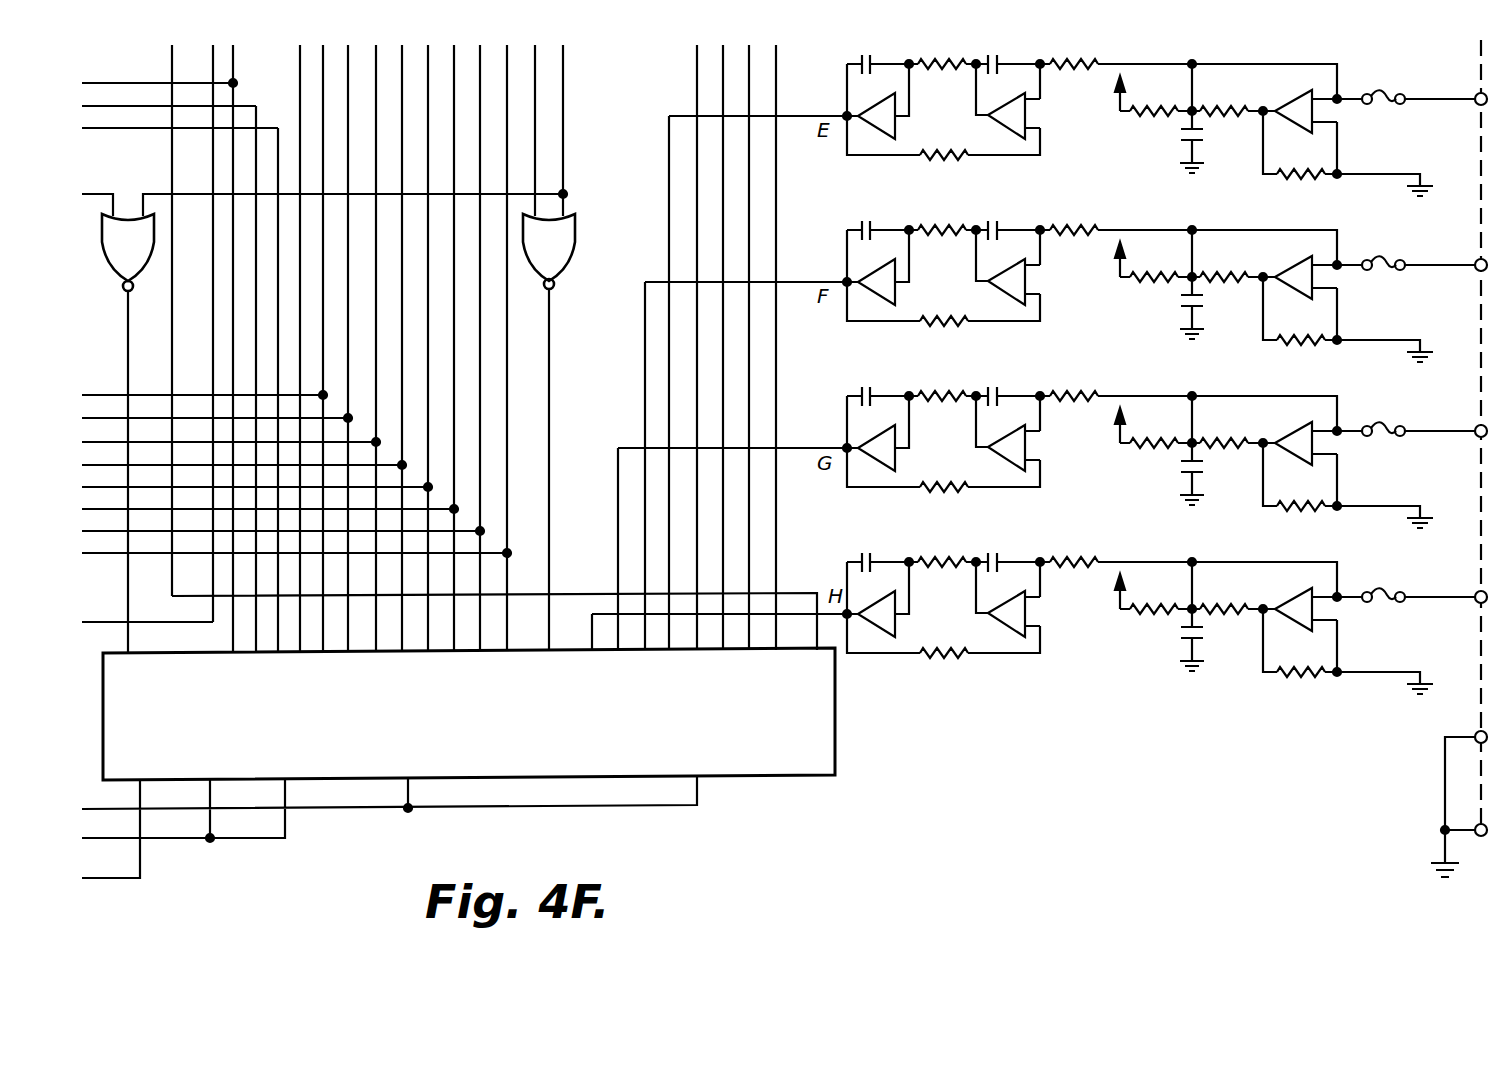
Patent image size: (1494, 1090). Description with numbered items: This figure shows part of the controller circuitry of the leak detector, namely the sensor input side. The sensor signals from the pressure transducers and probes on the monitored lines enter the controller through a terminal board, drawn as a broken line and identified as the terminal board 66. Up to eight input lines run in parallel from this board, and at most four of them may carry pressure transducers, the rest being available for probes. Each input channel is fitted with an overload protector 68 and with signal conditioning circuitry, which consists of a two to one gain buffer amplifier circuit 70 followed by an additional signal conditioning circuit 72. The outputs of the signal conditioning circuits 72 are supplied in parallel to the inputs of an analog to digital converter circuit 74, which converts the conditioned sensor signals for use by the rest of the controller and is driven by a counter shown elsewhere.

The terminal board 66 is at (1481, 72).
The overload protector 68 is at (1406, 346).
The two to one gain buffer amplifier circuit 70 is at (1236, 392).
The additional signal conditioning circuit 72 is at (964, 390).
The analog to digital converter circuit 74 is at (813, 758).